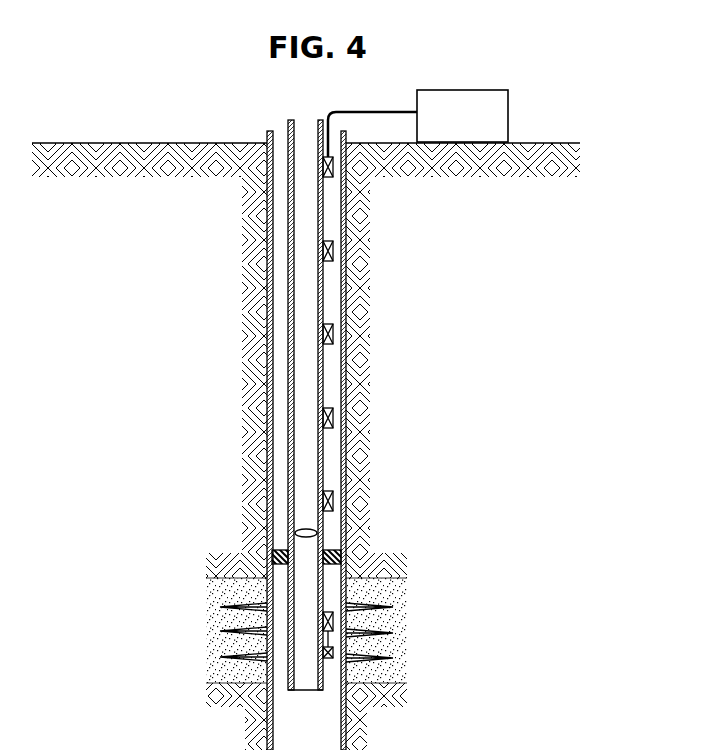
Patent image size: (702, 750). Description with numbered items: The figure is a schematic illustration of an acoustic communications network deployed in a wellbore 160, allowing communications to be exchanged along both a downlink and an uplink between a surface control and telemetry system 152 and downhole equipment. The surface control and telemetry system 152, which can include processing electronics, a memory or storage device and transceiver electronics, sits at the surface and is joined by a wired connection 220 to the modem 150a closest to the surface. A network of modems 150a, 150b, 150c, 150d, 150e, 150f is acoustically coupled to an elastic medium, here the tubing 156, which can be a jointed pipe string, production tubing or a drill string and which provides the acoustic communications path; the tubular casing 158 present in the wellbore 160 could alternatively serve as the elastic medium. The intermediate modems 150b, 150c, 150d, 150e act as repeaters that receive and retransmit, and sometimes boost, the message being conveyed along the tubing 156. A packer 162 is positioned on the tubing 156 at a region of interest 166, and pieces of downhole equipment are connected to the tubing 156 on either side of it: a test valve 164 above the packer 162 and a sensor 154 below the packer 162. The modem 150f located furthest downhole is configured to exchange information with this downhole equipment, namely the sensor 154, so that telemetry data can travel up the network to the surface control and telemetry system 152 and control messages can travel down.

The surface control and telemetry system 152 is at (445, 127).
The sensor 154 is at (334, 650).
The tubing 156 is at (290, 381).
The tubular casing 158 is at (262, 303).
The wellbore 160 is at (268, 250).
The packer 162 is at (335, 550).
The test valve 164 is at (296, 530).
The region of interest 166 is at (210, 616).
The wired connection 220 is at (387, 108).
The modem 150a is at (334, 167).
The modem 150b is at (334, 250).
The modem 150c is at (334, 333).
The modem 150d is at (334, 418).
The modem 150e is at (334, 501).
The modem 150f is at (336, 620).